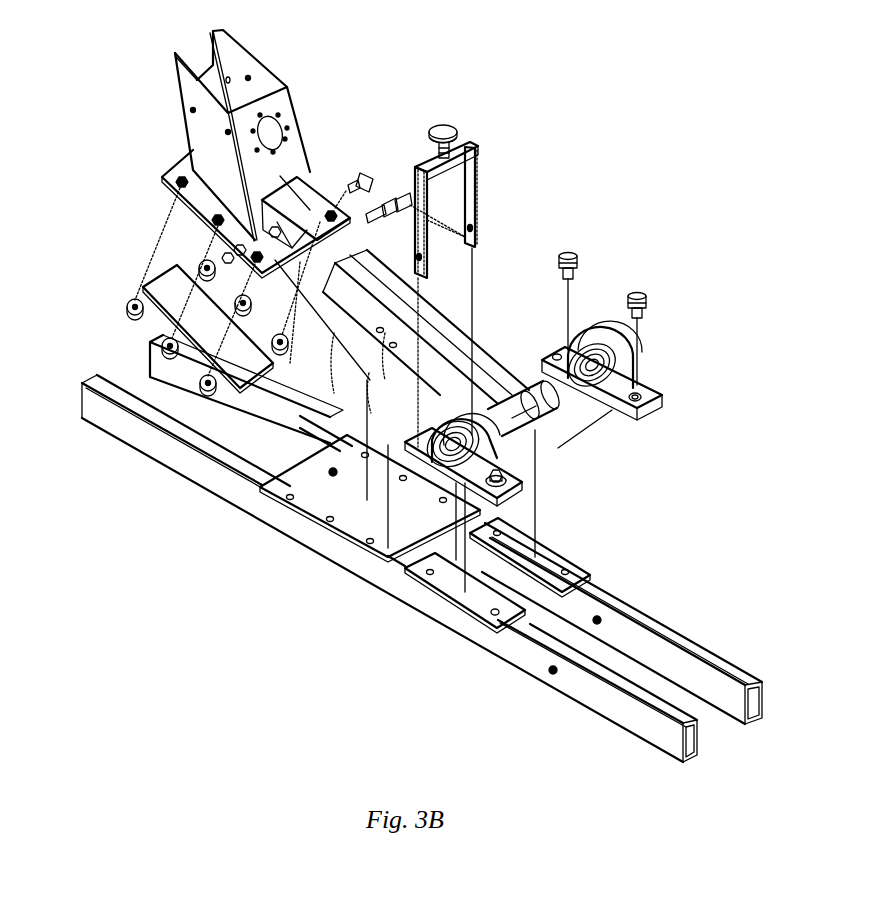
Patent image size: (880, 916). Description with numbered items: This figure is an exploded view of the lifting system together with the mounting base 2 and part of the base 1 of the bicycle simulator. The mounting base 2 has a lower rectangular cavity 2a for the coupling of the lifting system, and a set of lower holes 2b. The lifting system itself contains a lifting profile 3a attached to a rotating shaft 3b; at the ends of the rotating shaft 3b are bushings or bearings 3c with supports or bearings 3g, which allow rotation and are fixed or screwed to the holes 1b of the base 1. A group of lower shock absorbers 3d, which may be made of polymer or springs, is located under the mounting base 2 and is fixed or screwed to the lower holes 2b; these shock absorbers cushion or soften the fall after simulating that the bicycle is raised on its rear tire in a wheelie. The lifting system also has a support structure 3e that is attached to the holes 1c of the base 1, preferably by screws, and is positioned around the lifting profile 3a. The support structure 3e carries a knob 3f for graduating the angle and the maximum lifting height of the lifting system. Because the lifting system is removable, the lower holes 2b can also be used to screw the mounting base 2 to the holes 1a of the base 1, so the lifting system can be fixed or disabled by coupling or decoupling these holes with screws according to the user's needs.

The base 1 is at (419, 568).
The holes of the base 1a is at (341, 499).
The holes of the base 1b is at (429, 639).
The holes of the base 1c is at (432, 575).
The mounting base 2 is at (197, 135).
The lower rectangular cavity 2a is at (336, 216).
The lower holes 2b is at (201, 238).
The lifting profile 3a is at (426, 309).
The rotating shaft 3b is at (525, 355).
The bushings or bearings 3c is at (538, 362).
The lower shock absorbers 3d is at (187, 312).
The support structure 3e is at (479, 191).
The knob 3f is at (462, 107).
The supports or bearings 3g is at (607, 370).